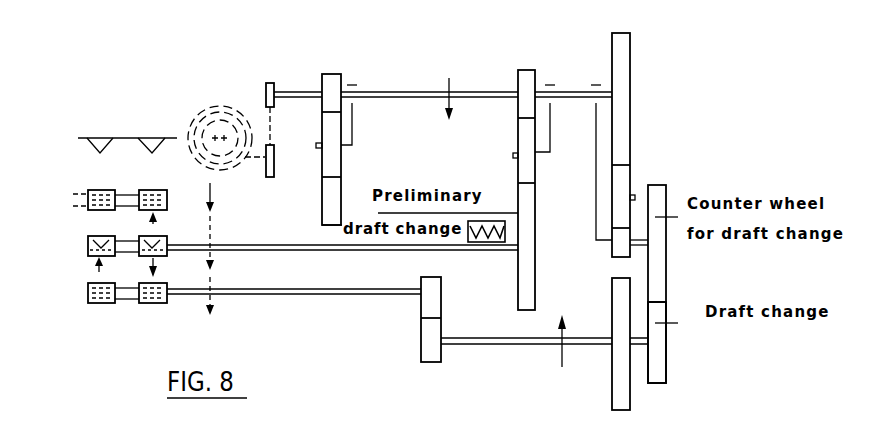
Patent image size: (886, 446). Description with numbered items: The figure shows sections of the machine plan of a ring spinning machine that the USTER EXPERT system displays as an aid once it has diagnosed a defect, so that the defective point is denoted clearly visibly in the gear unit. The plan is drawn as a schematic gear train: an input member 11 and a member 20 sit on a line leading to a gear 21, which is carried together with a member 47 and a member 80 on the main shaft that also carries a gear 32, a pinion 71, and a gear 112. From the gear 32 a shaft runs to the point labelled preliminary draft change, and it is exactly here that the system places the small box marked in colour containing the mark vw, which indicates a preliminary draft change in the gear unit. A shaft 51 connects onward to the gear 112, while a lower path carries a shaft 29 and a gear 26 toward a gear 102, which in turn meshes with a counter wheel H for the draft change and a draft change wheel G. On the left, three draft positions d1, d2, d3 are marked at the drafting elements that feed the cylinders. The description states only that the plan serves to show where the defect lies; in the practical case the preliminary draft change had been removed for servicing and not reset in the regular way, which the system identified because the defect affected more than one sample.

The drive shaft input 11 is at (270, 83).
The clutch 20 is at (286, 161).
The gear 21 is at (330, 80).
The shaft 47 is at (345, 202).
The gear 80 is at (341, 157).
The gear 32 is at (523, 78).
The pinion 71 is at (207, 110).
The gear 112 is at (612, 55).
The shaft 51 is at (612, 197).
The shaft 29 is at (452, 299).
The gear 26 is at (409, 319).
The gear 102 is at (630, 402).
The counter wheel for draft change H is at (655, 263).
The draft change wheel G is at (655, 362).
The draft position 1 d1 is at (153, 312).
The draft position 2 d2 is at (95, 225).
The draft position 3 d3 is at (149, 179).